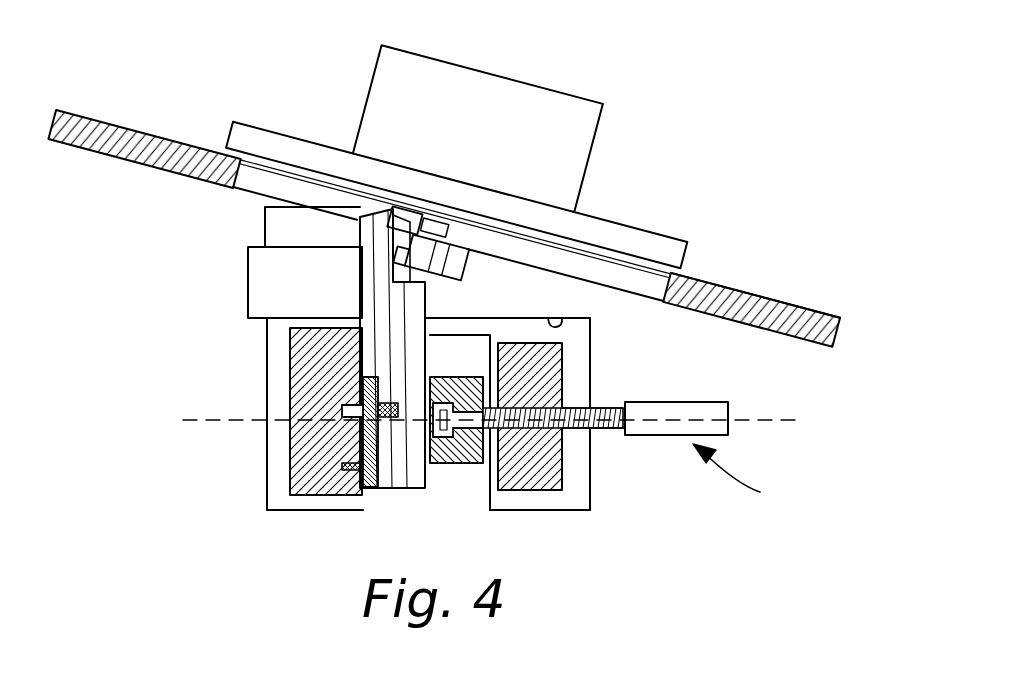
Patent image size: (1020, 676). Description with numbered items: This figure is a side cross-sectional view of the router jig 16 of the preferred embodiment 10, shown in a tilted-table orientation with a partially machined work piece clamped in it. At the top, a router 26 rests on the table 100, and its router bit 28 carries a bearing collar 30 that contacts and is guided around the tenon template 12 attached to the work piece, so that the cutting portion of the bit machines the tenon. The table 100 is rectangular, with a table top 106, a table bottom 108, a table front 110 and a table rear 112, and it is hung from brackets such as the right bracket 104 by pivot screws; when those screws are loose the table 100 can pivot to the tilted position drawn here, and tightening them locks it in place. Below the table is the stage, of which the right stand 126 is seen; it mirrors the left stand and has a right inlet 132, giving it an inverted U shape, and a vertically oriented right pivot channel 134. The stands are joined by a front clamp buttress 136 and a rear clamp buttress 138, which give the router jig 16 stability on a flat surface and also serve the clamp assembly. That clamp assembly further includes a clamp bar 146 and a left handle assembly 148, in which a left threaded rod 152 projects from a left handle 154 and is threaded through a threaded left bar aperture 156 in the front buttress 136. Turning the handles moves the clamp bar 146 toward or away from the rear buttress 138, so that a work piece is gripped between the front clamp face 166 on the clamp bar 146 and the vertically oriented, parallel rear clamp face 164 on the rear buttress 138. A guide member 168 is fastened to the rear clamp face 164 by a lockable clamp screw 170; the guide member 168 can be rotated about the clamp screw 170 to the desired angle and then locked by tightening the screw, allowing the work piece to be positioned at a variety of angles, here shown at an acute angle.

The preferred embodiment 10 is at (487, 421).
The tenon template 12 is at (410, 220).
The router jig 16 is at (160, 252).
The router 26 is at (493, 115).
The router bit 28 is at (532, 244).
The bearing collar 30 is at (494, 228).
The table 100 is at (703, 272).
The right bracket 104 is at (282, 283).
The table top 106 is at (740, 290).
The table bottom 108 is at (736, 322).
The table front 110 is at (790, 307).
The table rear 112 is at (95, 130).
The right stand 126 is at (270, 364).
The right inlet 132 is at (460, 353).
The right pivot channel 134 is at (560, 323).
The front clamp buttress 136 is at (532, 472).
The rear clamp buttress 138 is at (316, 446).
The clamp bar 146 is at (457, 454).
The left handle assembly 148 is at (752, 477).
The left threaded rod 152 is at (603, 431).
The left handle 154 is at (710, 430).
The threaded left bar aperture 156 is at (568, 410).
The rear clamp face 164 is at (365, 490).
The front clamp face 166 is at (495, 483).
The guide member 168 is at (362, 394).
The clamp screw 170 is at (360, 473).